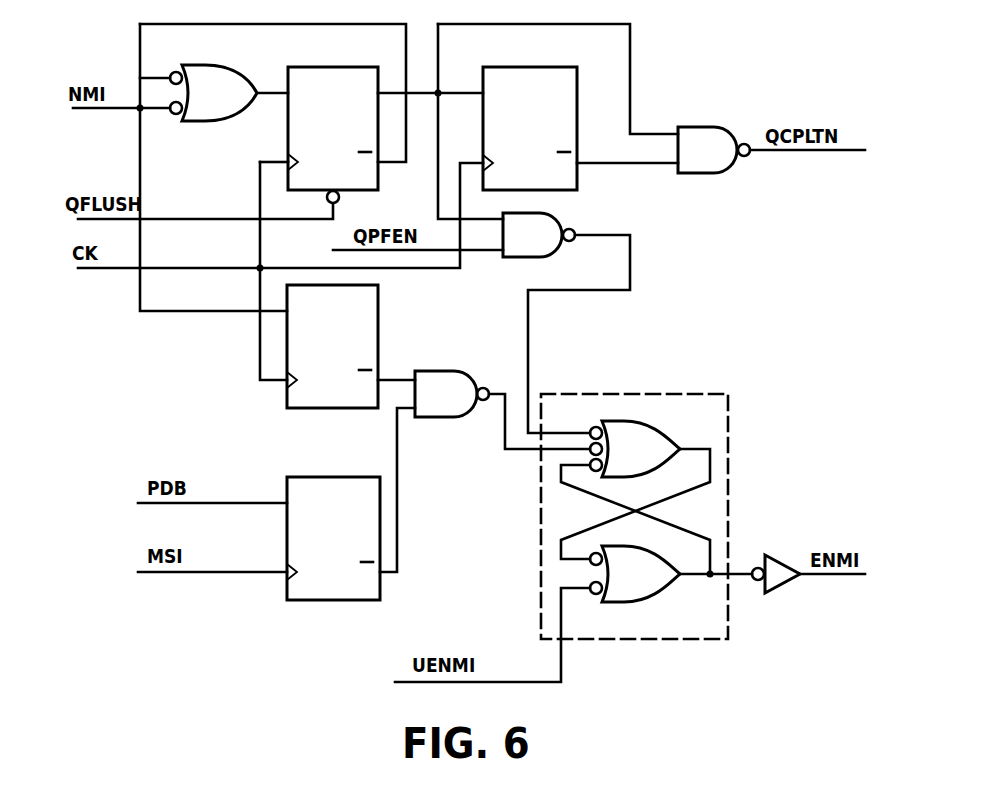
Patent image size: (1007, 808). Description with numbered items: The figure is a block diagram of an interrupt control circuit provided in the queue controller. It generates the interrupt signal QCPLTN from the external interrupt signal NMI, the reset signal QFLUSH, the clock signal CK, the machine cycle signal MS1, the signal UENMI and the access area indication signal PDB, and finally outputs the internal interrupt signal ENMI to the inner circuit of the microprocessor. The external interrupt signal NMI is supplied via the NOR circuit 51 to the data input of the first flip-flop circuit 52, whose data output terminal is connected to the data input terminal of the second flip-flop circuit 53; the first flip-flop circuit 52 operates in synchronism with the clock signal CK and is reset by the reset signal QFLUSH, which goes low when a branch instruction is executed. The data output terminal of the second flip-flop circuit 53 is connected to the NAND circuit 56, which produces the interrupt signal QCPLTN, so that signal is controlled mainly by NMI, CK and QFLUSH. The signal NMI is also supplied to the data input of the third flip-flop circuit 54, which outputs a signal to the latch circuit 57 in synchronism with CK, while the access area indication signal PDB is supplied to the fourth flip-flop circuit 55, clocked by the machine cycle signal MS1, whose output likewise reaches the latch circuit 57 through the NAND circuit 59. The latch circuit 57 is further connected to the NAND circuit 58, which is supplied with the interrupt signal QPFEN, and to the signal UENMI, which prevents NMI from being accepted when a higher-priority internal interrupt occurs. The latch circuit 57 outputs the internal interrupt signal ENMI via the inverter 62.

The NOR circuit 51 is at (213, 121).
The first flip-flop circuit 52 is at (337, 120).
The second flip-flop circuit 53 is at (534, 114).
The third flip-flop circuit 54 is at (367, 346).
The fourth flip-flop circuit 55 is at (333, 571).
The NAND circuit 56 is at (714, 122).
The latch circuit 57 is at (634, 550).
The NAND circuit 58 is at (519, 257).
The NAND circuit 59 is at (452, 420).
The inverter 62 is at (780, 601).